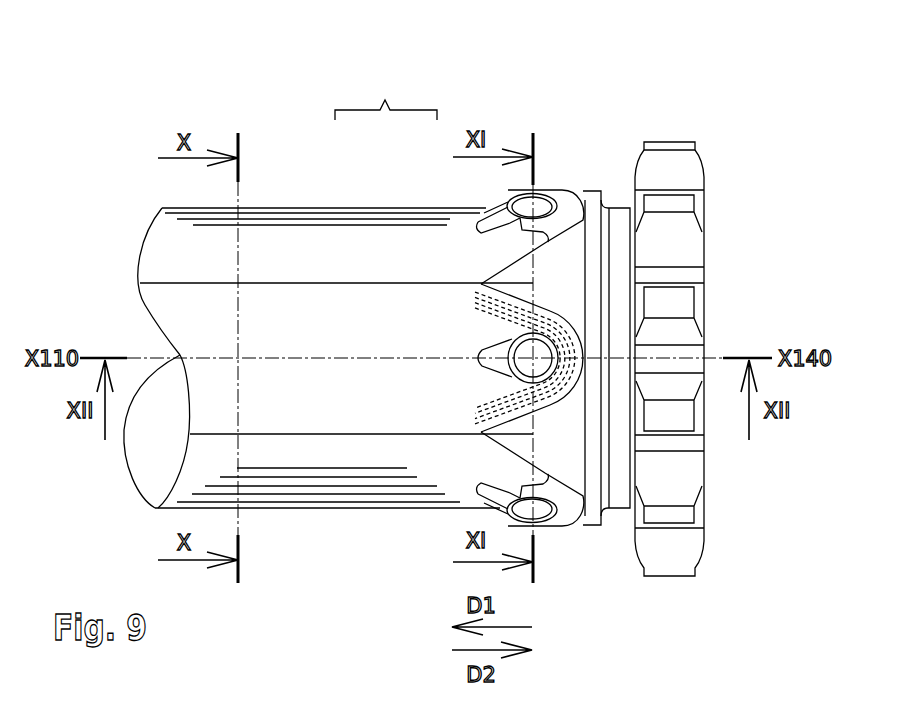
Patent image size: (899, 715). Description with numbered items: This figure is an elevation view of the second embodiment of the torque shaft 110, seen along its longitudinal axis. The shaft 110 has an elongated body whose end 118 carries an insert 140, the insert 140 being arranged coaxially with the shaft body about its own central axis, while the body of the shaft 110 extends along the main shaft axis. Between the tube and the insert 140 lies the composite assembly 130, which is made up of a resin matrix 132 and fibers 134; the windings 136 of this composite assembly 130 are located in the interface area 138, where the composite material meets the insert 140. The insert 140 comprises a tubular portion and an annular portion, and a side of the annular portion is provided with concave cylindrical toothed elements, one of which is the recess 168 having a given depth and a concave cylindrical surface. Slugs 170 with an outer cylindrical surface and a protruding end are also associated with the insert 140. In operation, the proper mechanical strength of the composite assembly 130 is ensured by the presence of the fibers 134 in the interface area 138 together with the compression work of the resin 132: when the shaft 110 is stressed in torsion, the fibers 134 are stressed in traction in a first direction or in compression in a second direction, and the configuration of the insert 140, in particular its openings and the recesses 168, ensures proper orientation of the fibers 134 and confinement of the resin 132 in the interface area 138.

The torque shaft 110 is at (165, 124).
The end 118 is at (603, 575).
The composite assembly 130 is at (386, 96).
The resin matrix 132 is at (383, 250).
The fibers 134 is at (481, 284).
The windings 136 is at (580, 347).
The interface area 138 is at (545, 164).
The insert 140 is at (672, 172).
The recess 168 is at (573, 409).
The slug 170 is at (556, 188).